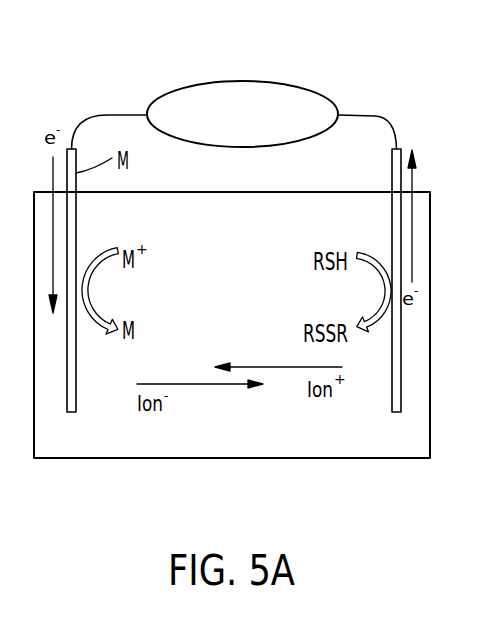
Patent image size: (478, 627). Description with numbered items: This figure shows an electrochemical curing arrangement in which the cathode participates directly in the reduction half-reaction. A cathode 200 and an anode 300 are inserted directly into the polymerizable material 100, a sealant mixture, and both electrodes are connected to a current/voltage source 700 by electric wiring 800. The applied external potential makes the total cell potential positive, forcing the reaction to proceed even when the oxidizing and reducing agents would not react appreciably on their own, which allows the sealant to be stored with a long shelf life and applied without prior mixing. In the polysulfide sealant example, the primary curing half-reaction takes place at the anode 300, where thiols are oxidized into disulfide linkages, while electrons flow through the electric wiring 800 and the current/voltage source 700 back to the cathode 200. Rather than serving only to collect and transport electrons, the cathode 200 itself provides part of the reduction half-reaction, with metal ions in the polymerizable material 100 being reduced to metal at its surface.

The polymerizable material 100 is at (252, 442).
The cathode 200 is at (73, 424).
The anode 300 is at (394, 424).
The current/voltage source 700 is at (227, 129).
The electric wiring 800 is at (378, 114).